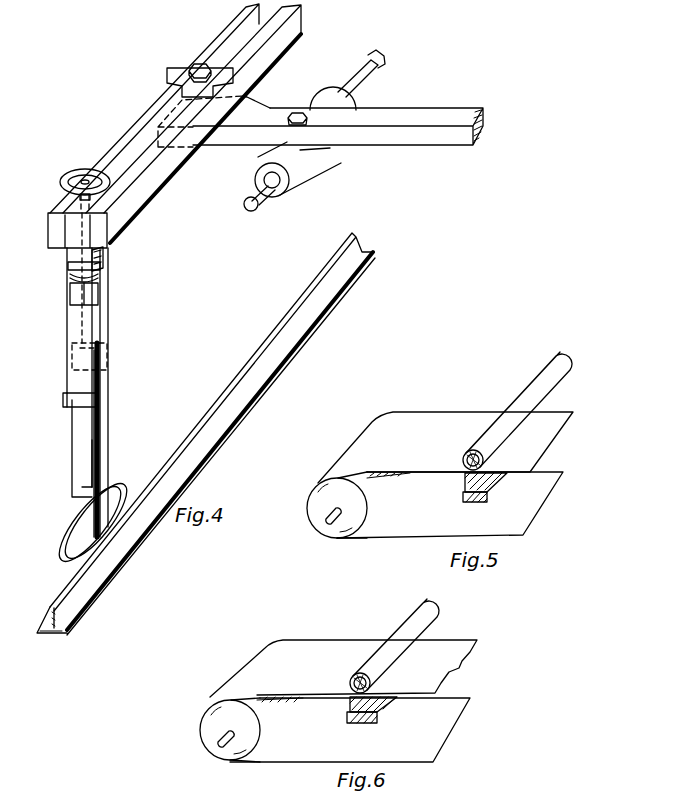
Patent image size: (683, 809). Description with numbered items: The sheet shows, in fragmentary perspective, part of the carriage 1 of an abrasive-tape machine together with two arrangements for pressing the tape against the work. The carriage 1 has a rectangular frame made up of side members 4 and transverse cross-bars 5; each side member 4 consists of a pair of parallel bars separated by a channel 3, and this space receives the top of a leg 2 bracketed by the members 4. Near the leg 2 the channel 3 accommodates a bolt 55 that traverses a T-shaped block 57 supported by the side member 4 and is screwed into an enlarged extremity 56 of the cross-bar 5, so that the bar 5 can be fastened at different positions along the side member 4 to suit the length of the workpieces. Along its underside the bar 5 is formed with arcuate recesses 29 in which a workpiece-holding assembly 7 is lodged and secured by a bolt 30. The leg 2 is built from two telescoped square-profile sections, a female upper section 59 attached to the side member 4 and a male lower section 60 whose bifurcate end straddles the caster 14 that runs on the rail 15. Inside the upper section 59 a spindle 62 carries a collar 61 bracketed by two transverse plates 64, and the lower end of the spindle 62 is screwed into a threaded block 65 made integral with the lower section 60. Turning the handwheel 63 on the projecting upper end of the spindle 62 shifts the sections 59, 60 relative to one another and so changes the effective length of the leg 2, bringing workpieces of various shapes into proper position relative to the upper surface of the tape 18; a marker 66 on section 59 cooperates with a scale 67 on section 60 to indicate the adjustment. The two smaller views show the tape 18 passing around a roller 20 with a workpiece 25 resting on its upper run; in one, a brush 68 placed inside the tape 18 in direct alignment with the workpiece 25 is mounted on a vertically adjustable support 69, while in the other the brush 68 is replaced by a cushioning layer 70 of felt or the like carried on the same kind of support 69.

In FIG. 4, the carriage 1 is at (275, 50).
In FIG. 4, the leg 2 is at (80, 383).
In FIG. 4, the channel 3 is at (222, 47).
In FIG. 4, the side member 4 is at (142, 167).
In FIG. 4, the cross-bar 5 is at (372, 118).
In FIG. 4, the workpiece-holding assembly 7 is at (334, 100).
In FIG. 4, the caster 14 is at (117, 500).
In FIG. 4, the rail 15 is at (237, 397).
In FIG. 5, the abrasive tape 18 is at (443, 436).
In FIG. 6, the abrasive tape 18 is at (342, 660).
In FIG. 5, the roller 20 is at (345, 495).
In FIG. 6, the roller 20 is at (245, 723).
In FIG. 5, the workpiece 25 is at (540, 390).
In FIG. 6, the workpiece 25 is at (403, 638).
In FIG. 4, the arcuate recess 29 is at (300, 150).
In FIG. 4, the bolt 30 is at (298, 112).
In FIG. 4, the bolt 55 is at (202, 63).
In FIG. 4, the enlarged extremity 56 is at (237, 120).
In FIG. 4, the T-shaped block 57 is at (187, 77).
In FIG. 4, the upper leg section 59 is at (100, 327).
In FIG. 4, the lower leg section 60 is at (103, 447).
In FIG. 4, the collar 61 is at (103, 280).
In FIG. 4, the spindle 62 is at (82, 297).
In FIG. 4, the handwheel 63 is at (68, 192).
In FIG. 4, the transverse plate 64 is at (100, 268).
In FIG. 4, the threaded block 65 is at (107, 345).
In FIG. 4, the marker 66 is at (70, 406).
In FIG. 4, the scale 67 is at (98, 443).
In FIG. 5, the brush 68 is at (507, 480).
In FIG. 5, the support 69 is at (487, 498).
In FIG. 6, the support 69 is at (377, 722).
In FIG. 6, the cushioning layer 70 is at (393, 708).